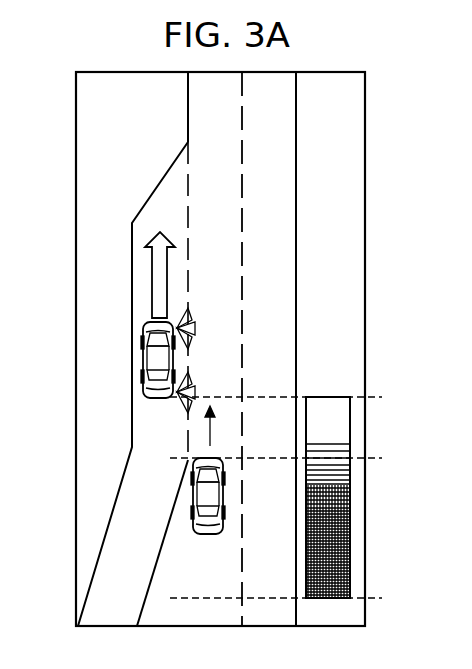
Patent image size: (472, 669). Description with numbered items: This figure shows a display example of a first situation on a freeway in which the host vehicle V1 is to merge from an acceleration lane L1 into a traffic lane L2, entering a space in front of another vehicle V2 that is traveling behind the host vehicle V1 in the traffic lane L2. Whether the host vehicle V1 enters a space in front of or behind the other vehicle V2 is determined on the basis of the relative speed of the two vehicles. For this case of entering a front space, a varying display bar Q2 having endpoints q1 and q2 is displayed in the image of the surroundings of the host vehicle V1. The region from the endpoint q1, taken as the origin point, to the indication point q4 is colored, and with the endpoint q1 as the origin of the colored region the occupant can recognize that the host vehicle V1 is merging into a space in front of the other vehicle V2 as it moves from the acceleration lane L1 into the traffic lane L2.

The acceleration lane L1 is at (163, 203).
The traffic lane L2 is at (188, 107).
The host vehicle V1 is at (160, 364).
The other vehicle V2 is at (210, 535).
The varying display bar Q2 is at (340, 427).
The endpoint q1 is at (294, 601).
The endpoint q2 is at (294, 401).
The indication point q4 is at (294, 461).